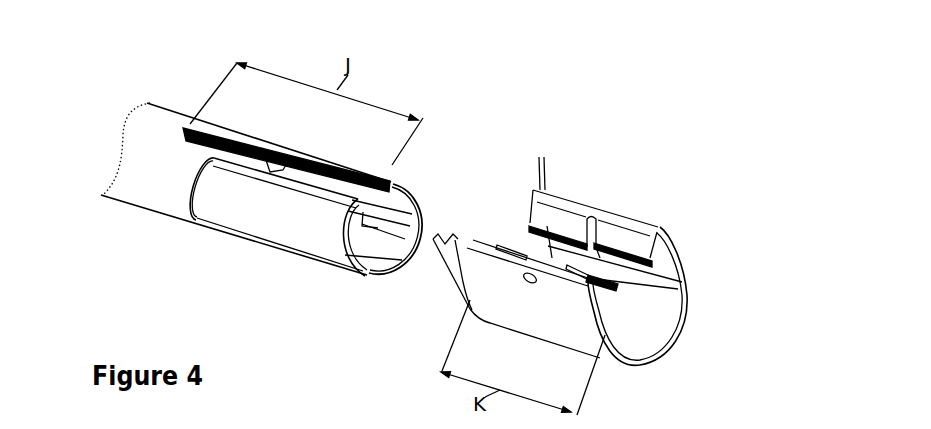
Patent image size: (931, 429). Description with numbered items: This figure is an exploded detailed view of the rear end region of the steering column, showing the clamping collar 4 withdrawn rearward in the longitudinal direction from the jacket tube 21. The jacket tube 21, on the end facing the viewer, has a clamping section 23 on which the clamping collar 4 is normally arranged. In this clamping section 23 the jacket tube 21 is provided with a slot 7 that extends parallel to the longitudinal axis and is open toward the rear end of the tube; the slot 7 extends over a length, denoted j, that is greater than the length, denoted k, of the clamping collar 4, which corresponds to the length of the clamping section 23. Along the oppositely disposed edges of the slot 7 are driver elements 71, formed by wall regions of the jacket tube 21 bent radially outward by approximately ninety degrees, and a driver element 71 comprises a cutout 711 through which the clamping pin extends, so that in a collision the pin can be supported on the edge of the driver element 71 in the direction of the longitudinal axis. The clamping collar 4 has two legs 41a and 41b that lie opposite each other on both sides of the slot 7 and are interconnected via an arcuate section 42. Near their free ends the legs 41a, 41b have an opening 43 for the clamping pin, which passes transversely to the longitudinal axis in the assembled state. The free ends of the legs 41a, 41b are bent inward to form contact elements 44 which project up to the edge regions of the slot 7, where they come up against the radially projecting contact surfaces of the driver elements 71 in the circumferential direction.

The jacket tube 21 is at (152, 187).
The clamping section 23 is at (300, 230).
The slot 7 is at (318, 172).
The cutout 711 is at (290, 193).
The driver elements 71 is at (396, 160).
The clamping collar 4 is at (652, 196).
The arcuate section 42 is at (683, 329).
The leg 41a is at (674, 240).
The leg 41b is at (597, 320).
The opening 43 is at (593, 230).
The contact elements 44 is at (600, 288).